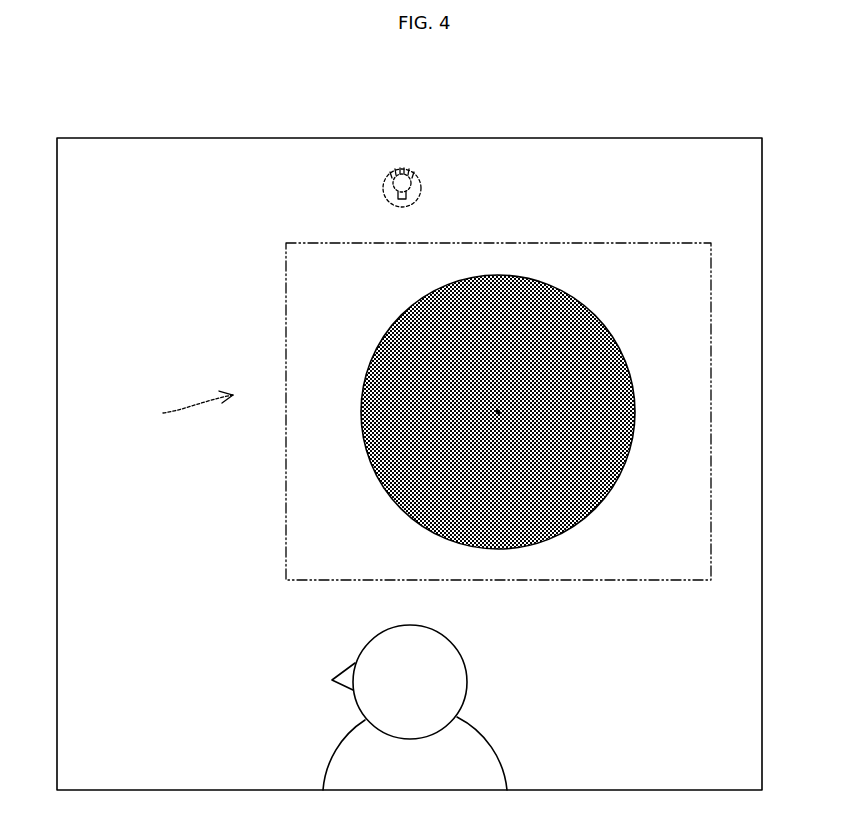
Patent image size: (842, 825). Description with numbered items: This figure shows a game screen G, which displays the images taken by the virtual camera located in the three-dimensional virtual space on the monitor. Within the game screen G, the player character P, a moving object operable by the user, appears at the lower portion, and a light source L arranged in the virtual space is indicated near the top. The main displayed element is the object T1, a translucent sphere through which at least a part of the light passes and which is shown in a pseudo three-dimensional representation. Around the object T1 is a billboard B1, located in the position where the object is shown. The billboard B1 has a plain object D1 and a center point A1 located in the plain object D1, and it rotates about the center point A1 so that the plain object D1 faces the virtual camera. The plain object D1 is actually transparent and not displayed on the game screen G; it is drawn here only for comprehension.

The game screen G is at (544, 138).
The plain object D1 is at (642, 256).
The object T1 is at (395, 493).
The center point A1 is at (498, 412).
The light source L is at (422, 196).
The billboard B1 is at (182, 406).
The player character P is at (460, 683).